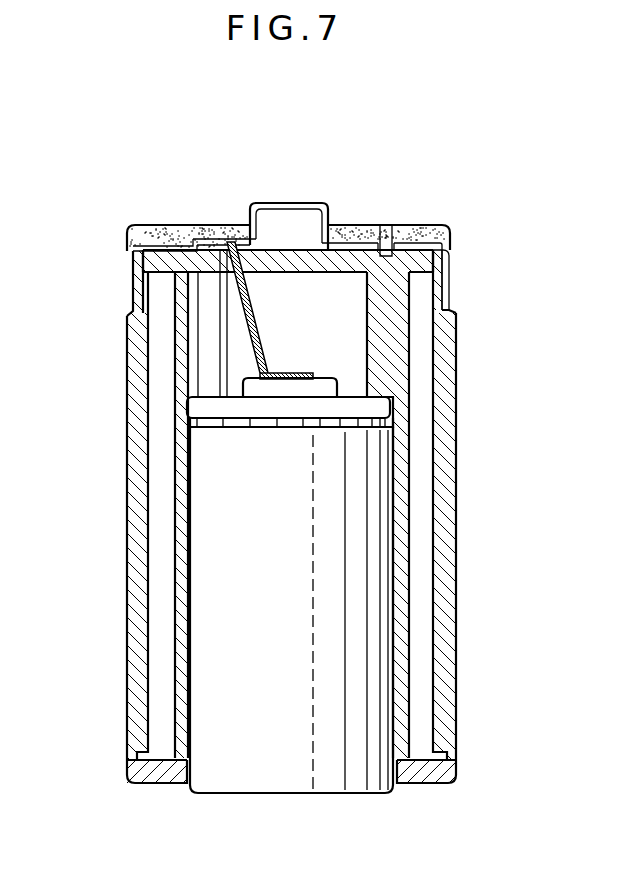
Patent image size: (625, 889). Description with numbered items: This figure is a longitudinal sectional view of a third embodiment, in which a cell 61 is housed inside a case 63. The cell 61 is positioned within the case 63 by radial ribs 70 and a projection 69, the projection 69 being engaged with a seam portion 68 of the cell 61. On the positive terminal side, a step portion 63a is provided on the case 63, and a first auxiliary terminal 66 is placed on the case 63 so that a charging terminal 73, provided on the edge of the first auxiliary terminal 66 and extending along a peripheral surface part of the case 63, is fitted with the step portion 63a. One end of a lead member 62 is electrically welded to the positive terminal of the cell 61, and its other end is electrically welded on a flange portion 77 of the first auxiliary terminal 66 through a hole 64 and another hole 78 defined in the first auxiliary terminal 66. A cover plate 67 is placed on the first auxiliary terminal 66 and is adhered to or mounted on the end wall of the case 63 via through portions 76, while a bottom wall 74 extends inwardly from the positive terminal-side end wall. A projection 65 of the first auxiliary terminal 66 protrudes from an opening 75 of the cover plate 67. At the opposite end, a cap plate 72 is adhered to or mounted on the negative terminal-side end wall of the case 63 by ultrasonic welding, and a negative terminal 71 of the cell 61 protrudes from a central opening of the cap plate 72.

The cell 61 is at (373, 623).
The lead member 62 is at (174, 366).
The case 63 is at (446, 367).
The step portion 63a is at (451, 276).
The hole 64 is at (213, 255).
The projection 65 is at (326, 205).
The first auxiliary terminal 66 is at (430, 238).
The cover plate 67 is at (179, 228).
The seam portion 68 is at (288, 422).
The projection 69 is at (391, 470).
The radial ribs 70 is at (444, 311).
The negative terminal 71 is at (307, 795).
The cap plate 72 is at (416, 777).
The charging terminal 73 is at (447, 262).
The bottom wall 74 is at (292, 273).
The opening 75 is at (249, 228).
The through portions 76 is at (386, 242).
The flange portion 77 is at (149, 248).
The hole 78 is at (220, 241).